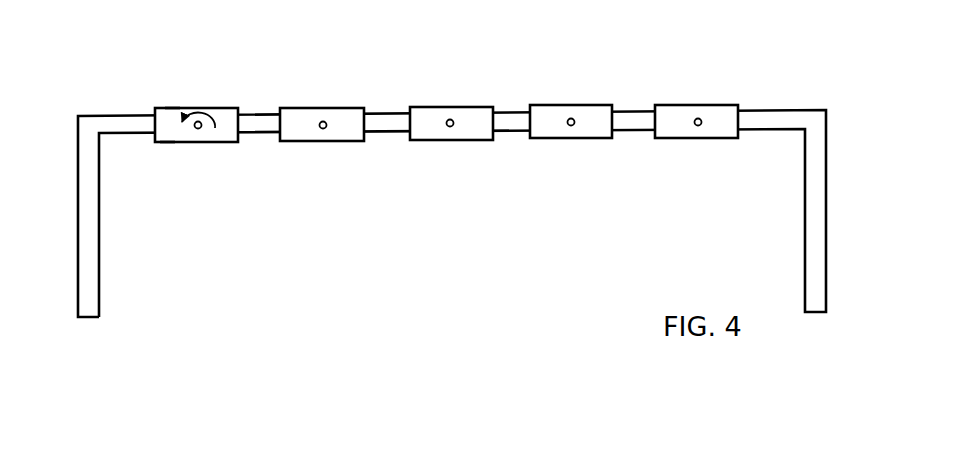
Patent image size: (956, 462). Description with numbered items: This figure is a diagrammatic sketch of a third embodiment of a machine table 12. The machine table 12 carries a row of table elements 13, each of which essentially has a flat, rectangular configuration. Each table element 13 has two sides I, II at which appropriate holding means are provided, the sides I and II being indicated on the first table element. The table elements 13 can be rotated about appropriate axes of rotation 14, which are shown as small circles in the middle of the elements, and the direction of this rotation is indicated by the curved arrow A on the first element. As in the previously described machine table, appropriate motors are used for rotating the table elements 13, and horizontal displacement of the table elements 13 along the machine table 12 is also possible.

The machine table 12 is at (764, 87).
The table element 13 is at (223, 106).
The axis of rotation 14 is at (199, 129).
The direction of rotation A is at (207, 135).
The side I is at (172, 108).
The side II is at (167, 142).